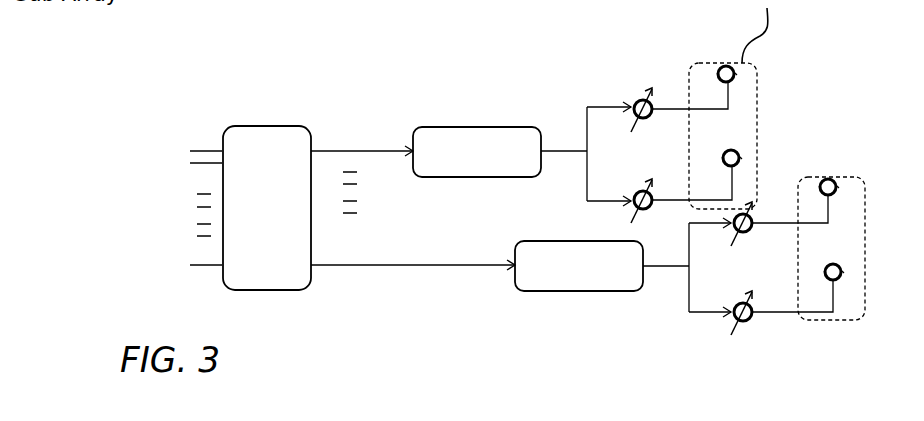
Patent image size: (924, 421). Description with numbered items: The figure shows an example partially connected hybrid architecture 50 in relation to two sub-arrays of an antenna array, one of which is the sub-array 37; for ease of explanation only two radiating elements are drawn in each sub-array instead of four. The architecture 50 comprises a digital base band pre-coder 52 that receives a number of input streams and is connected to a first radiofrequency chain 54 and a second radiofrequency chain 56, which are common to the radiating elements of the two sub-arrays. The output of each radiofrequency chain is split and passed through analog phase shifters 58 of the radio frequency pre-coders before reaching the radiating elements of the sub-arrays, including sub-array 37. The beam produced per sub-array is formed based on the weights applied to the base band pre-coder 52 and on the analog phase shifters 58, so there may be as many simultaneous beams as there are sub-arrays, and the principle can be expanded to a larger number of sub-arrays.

The hybrid architecture 50 is at (157, 128).
The digital base band pre-coder 52 is at (268, 126).
The first radiofrequency chain 54 is at (473, 127).
The second radiofrequency chain 56 is at (570, 291).
The analog phase shifter 58 is at (643, 97).
The sub-array 37 is at (860, 177).